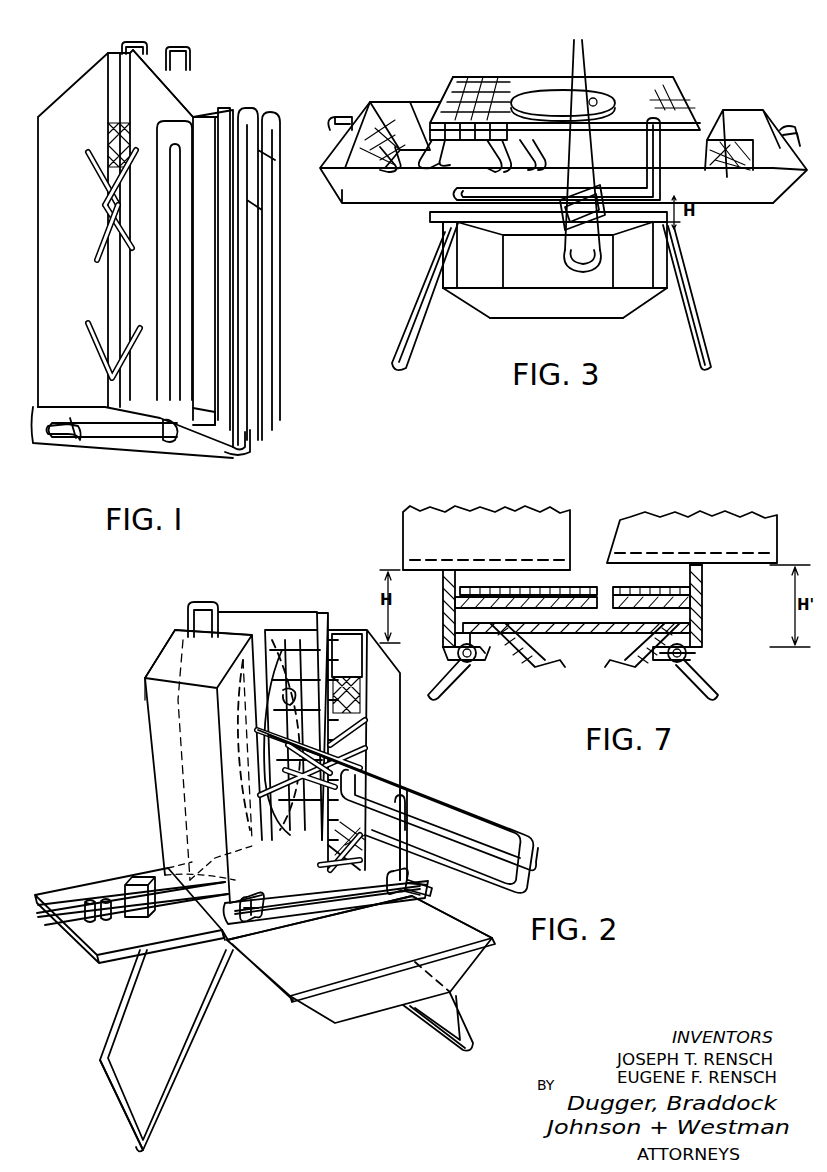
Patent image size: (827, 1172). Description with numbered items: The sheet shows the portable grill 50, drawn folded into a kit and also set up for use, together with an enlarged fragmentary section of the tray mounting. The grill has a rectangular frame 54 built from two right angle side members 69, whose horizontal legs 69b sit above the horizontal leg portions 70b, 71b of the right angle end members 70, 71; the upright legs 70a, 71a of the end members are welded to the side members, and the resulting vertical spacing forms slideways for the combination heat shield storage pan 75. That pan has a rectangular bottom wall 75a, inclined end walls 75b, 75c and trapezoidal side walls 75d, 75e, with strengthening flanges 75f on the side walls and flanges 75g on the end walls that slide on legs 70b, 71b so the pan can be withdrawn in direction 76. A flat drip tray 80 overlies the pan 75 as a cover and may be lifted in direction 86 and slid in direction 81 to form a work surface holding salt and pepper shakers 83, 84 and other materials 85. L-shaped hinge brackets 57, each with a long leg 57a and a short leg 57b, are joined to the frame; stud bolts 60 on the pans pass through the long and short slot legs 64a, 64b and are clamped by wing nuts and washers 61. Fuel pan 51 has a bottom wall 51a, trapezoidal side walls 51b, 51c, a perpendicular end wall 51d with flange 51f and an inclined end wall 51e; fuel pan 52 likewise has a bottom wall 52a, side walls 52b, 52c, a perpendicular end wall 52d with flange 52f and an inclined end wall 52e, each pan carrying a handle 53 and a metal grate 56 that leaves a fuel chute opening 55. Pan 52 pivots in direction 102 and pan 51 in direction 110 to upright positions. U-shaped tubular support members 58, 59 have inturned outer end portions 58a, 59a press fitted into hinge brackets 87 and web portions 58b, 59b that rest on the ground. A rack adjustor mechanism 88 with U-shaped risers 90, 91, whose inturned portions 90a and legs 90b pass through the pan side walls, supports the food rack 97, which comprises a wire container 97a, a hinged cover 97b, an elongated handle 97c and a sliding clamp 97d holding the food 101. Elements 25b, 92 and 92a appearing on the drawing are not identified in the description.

In FIG. 3, the shelf bar 25b is at (672, 243).
In FIG. 1, the portable grill 50 is at (80, 86).
In FIG. 1, the fuel pan 51 is at (193, 80).
In FIG. 3, the fuel pan 51 is at (345, 193).
In FIG. 7, the fuel pan 51 is at (455, 525).
In FIG. 2, the fuel pan 51 is at (160, 668).
In FIG. 7, the bottom wall 51a is at (505, 560).
In FIG. 2, the bottom wall 51a is at (199, 760).
In FIG. 7, the trapezoidal side wall 51b is at (486, 548).
In FIG. 2, the trapezoidal side wall 51b is at (253, 750).
In FIG. 1, the trapezoidal side wall 51c is at (150, 82).
In FIG. 2, the trapezoidal side wall 51c is at (170, 642).
In FIG. 2, the perpendicular end wall 51d is at (210, 882).
In FIG. 3, the inclined end wall 51e is at (365, 112).
In FIG. 2, the inclined end wall 51e is at (213, 648).
In FIG. 2, the flange 51f is at (215, 852).
In FIG. 1, the fuel pan 52 is at (73, 230).
In FIG. 3, the fuel pan 52 is at (773, 205).
In FIG. 7, the fuel pan 52 is at (708, 525).
In FIG. 7, the bottom wall 52a is at (625, 555).
In FIG. 7, the trapezoidal side wall 52b is at (692, 545).
In FIG. 2, the trapezoidal side wall 52b is at (359, 746).
In FIG. 1, the trapezoidal side wall 52c is at (71, 343).
In FIG. 2, the perpendicular end wall 52d is at (372, 900).
In FIG. 2, the inclined end wall 52e is at (347, 652).
In FIG. 2, the flange 52f is at (344, 844).
In FIG. 1, the handle 53 is at (135, 42).
In FIG. 1, the frame 54 is at (210, 128).
In FIG. 3, the opening 55 is at (398, 100).
In FIG. 3, the metal grate 56 is at (425, 112).
In FIG. 1, the hinge bracket 57 is at (175, 122).
In FIG. 2, the hinge bracket 57 is at (412, 874).
In FIG. 2, the long leg 57a is at (320, 897).
In FIG. 1, the short leg 57b is at (58, 440).
In FIG. 2, the short leg 57b is at (413, 805).
In FIG. 1, the frame support member 58 is at (263, 410).
In FIG. 7, the frame support member 58 is at (437, 695).
In FIG. 2, the frame support member 58 is at (185, 1060).
In FIG. 7, the outer end portion 58a is at (470, 663).
In FIG. 2, the web portion 58b is at (168, 1080).
In FIG. 2, the frame support member 59 is at (472, 1040).
In FIG. 7, the outer end portion 59a is at (680, 665).
In FIG. 2, the web portion 59b is at (442, 1032).
In FIG. 2, the stud bolt 60 is at (262, 915).
In FIG. 2, the wing nut and washers 61 is at (218, 935).
In FIG. 2, the long leg of slot 64a is at (292, 910).
In FIG. 2, the short leg of slot 64b is at (440, 808).
In FIG. 1, the side member 69 is at (203, 445).
In FIG. 7, the side member 69 is at (722, 690).
In FIG. 2, the side member 69 is at (413, 903).
In FIG. 7, the horizontal leg 69b is at (690, 602).
In FIG. 7, the end member 70 is at (443, 622).
In FIG. 2, the end member 70 is at (223, 938).
In FIG. 3, the upright leg 70a is at (457, 196).
In FIG. 7, the upright leg 70a is at (443, 578).
In FIG. 7, the horizontal leg portion 70b is at (445, 660).
In FIG. 1, the second end member 71 is at (222, 460).
In FIG. 7, the second end member 71 is at (702, 612).
In FIG. 2, the second end member 71 is at (436, 894).
In FIG. 7, the upright leg 71a is at (702, 582).
In FIG. 7, the horizontal leg portion 71b is at (655, 660).
In FIG. 3, the heat shield storage pan 75 is at (625, 312).
In FIG. 2, the heat shield storage pan 75 is at (463, 960).
In FIG. 2, the bottom wall 75a is at (319, 930).
In FIG. 7, the inclined end wall 75b is at (700, 637).
In FIG. 3, the inclined end wall 75c is at (468, 262).
In FIG. 3, the trapezoidal side wall 75d is at (518, 312).
In FIG. 3, the trapezoidal side wall 75e is at (535, 228).
In FIG. 7, the trapezoidal side wall 75e is at (553, 665).
In FIG. 2, the flange 75f is at (352, 972).
In FIG. 2, the flange 75g is at (474, 928).
In FIG. 2, the withdrawal direction 76 is at (252, 1020).
In FIG. 7, the drip tray 80 is at (440, 592).
In FIG. 2, the drip tray 80 is at (150, 930).
In FIG. 2, the sliding direction 81 is at (85, 982).
In FIG. 2, the salt shaker 83 is at (90, 898).
In FIG. 2, the pepper shaker 84 is at (107, 897).
In FIG. 2, the other materials 85 is at (140, 877).
In FIG. 2, the upward direction 86 is at (117, 789).
In FIG. 7, the hinge bracket 87 is at (478, 656).
In FIG. 1, the rack adjustor mechanism 88 is at (101, 182).
In FIG. 2, the riser 90 is at (360, 858).
In FIG. 2, the inturned portion 90a is at (358, 845).
In FIG. 1, the leg 90b is at (100, 358).
In FIG. 1, the riser 91 is at (103, 200).
In FIG. 2, the riser 91 is at (345, 728).
In FIG. 1, the hook 92 is at (98, 252).
In FIG. 2, the hook 92a is at (365, 762).
In FIG. 3, the food rack 97 is at (620, 74).
In FIG. 3, the wire container 97a is at (420, 190).
In FIG. 3, the cover portion 97b is at (487, 92).
In FIG. 3, the handle 97c is at (578, 80).
In FIG. 3, the clamp member 97d is at (615, 235).
In FIG. 3, the food 101 is at (530, 88).
In FIG. 2, the food 101 is at (298, 650).
In FIG. 3, the pivot direction 102 is at (745, 245).
In FIG. 2, the pivot direction 110 is at (128, 742).